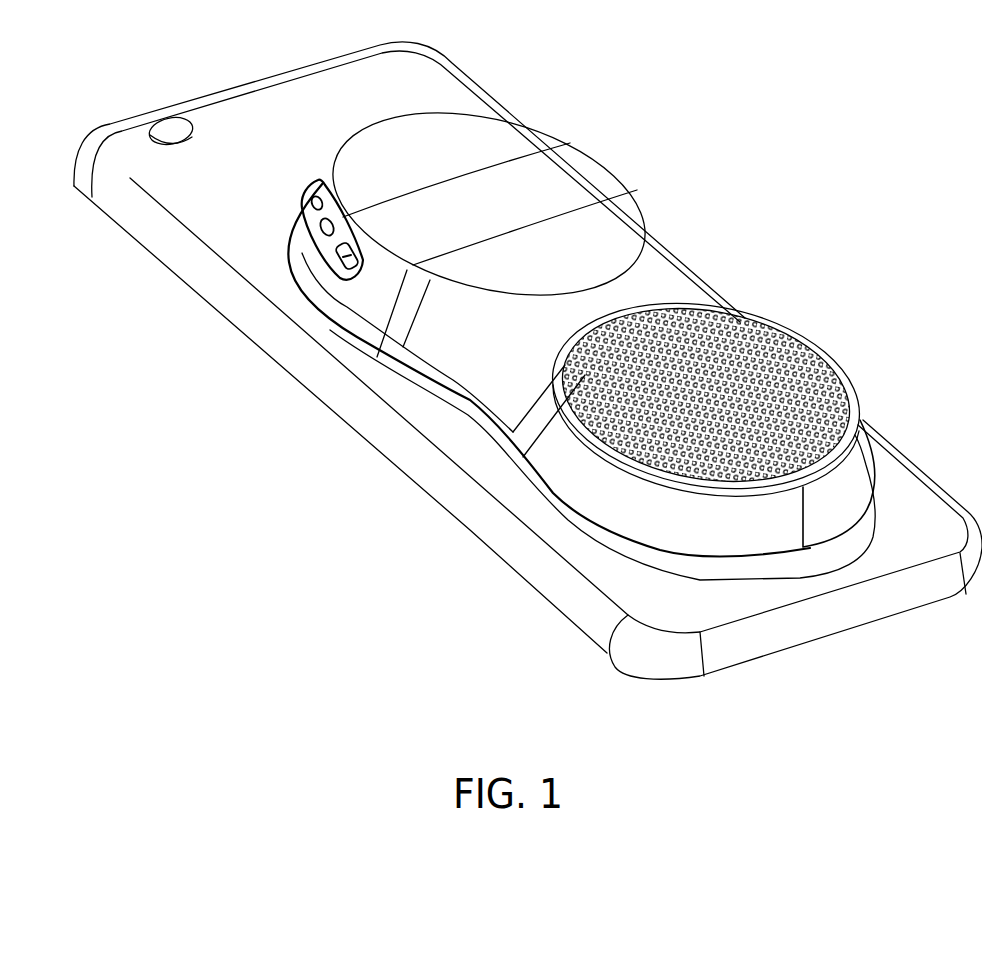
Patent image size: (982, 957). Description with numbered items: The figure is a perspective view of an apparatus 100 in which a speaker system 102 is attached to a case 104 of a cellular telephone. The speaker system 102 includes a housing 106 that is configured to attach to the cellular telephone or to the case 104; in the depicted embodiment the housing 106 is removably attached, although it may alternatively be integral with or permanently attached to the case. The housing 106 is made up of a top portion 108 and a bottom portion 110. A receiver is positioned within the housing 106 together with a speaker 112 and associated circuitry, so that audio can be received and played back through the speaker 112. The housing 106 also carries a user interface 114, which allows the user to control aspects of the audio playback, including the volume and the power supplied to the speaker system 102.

The apparatus 100 is at (185, 40).
The speaker system 102 is at (681, 252).
The case 104 is at (458, 539).
The housing 106 is at (441, 135).
The top portion 108 is at (449, 362).
The bottom portion 110 is at (291, 306).
The speaker 112 is at (787, 344).
The user interface 114 is at (297, 189).